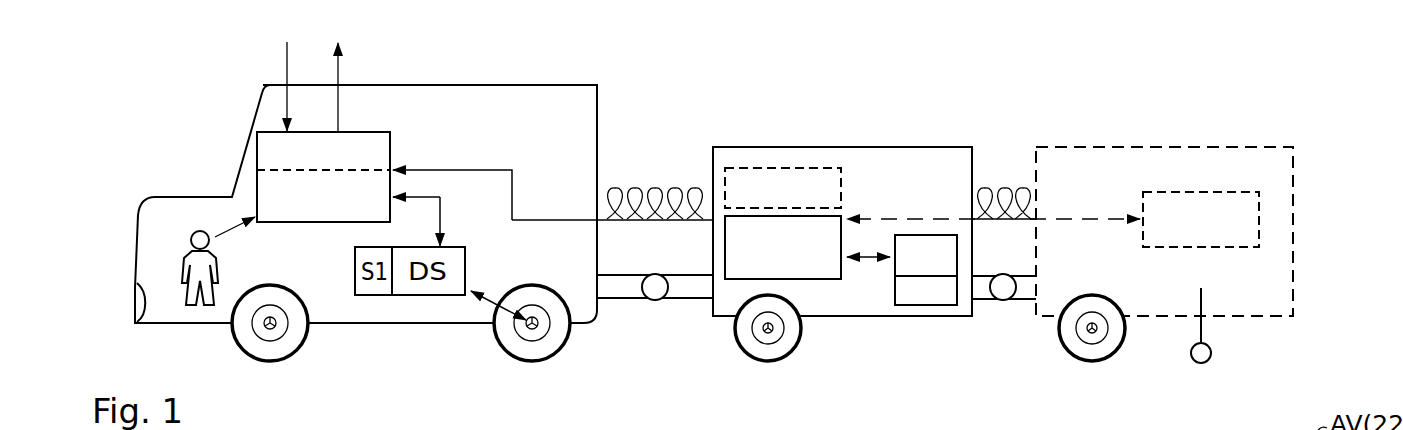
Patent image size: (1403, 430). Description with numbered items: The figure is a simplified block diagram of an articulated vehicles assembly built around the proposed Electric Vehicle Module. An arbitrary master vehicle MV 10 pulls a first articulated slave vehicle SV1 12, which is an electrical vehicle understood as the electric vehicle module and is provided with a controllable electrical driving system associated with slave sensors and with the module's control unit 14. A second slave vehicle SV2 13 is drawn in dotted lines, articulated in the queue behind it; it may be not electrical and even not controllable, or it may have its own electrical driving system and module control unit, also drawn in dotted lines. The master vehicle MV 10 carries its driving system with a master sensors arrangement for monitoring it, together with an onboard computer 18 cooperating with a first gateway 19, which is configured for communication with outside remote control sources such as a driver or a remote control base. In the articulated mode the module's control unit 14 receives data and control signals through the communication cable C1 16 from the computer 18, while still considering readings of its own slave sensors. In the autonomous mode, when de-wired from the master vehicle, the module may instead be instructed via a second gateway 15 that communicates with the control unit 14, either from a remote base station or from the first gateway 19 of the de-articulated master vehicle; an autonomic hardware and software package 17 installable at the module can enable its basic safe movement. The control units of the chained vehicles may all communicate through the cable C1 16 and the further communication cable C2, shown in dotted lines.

The master vehicle 10 is at (508, 85).
The first slave vehicle 12 is at (740, 147).
The second slave vehicle 13 is at (1132, 146).
The module's control unit 14 is at (818, 279).
The gateway GW2 15 is at (800, 168).
The communication cable 16 is at (636, 192).
The autonomic hardware and software package 17 is at (832, 210).
The computer 18 is at (322, 222).
The gateway GW1 19 is at (365, 132).
The master vehicle MV is at (200, 197).
The first slave vehicle SV1 is at (948, 165).
The second slave vehicle SV2 is at (1272, 170).
The communication cable C1 is at (656, 235).
The communication cable C2 is at (1004, 220).